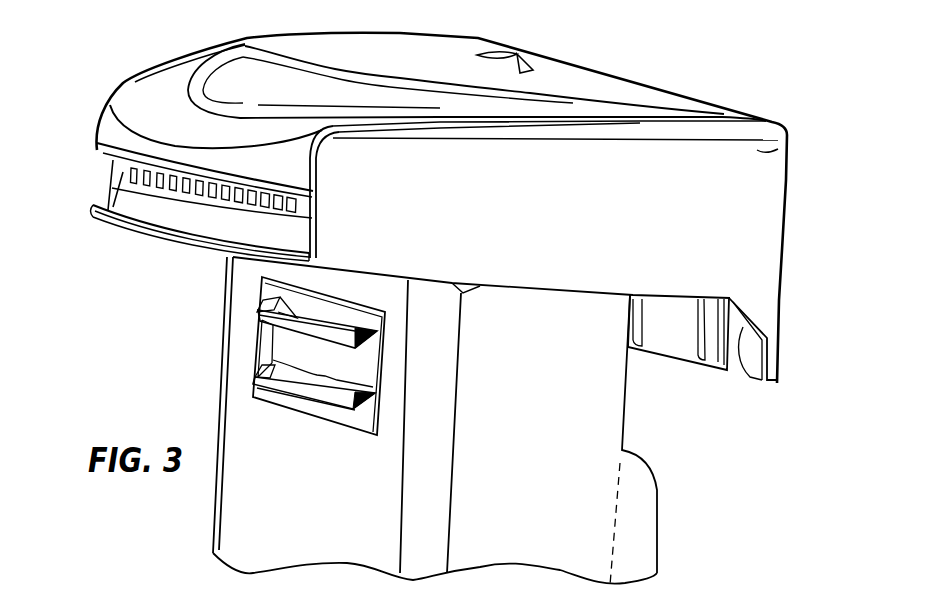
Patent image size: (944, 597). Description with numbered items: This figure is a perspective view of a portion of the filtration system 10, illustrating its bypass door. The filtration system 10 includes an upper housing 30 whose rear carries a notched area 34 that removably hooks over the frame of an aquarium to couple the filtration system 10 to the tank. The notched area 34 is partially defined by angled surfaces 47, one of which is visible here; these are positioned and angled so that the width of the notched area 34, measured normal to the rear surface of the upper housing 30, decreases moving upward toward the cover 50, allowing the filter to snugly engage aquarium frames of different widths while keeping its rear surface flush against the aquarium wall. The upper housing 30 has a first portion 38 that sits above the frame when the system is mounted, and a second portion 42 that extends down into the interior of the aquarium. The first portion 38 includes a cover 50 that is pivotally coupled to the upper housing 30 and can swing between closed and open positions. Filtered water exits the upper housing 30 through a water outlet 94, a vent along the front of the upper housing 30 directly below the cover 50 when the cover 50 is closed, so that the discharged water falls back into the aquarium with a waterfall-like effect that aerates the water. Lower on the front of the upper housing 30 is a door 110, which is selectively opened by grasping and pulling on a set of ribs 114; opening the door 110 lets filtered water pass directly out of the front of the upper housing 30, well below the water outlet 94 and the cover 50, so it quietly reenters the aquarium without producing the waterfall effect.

The filtration system 10 is at (650, 76).
The upper housing 30 is at (792, 208).
The notched area 34 is at (645, 364).
The first portion 38 is at (757, 150).
The second portion 42 is at (583, 418).
The angled surfaces 47 is at (738, 331).
The cover 50 is at (242, 58).
The water outlet 94 is at (117, 181).
The door 110 is at (290, 348).
The ribs 114 is at (262, 292).